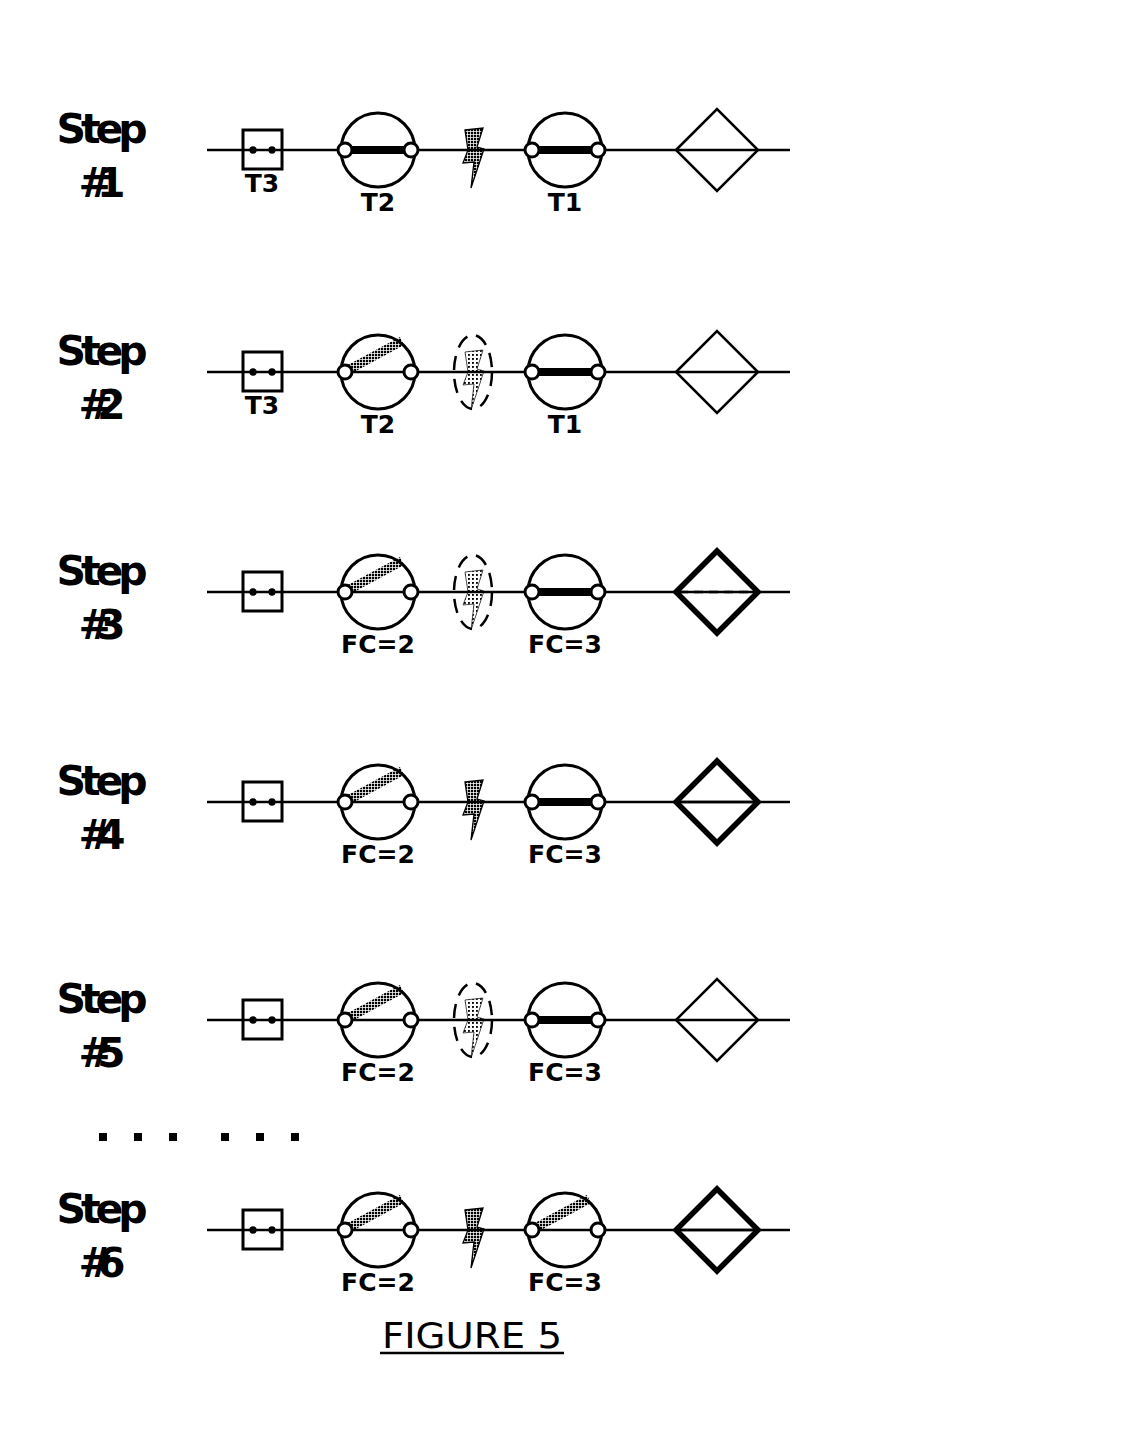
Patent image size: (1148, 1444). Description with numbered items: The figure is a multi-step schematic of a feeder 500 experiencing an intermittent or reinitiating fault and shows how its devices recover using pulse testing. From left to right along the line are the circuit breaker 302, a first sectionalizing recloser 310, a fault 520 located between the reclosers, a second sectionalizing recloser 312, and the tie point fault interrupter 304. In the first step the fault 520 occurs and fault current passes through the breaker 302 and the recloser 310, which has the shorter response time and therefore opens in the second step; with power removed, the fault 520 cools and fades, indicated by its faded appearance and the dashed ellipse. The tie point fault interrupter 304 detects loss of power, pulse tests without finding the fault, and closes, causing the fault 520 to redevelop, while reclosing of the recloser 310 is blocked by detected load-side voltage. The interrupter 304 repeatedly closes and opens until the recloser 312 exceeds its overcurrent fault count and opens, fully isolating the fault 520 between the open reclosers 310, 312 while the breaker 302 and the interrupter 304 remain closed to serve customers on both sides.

The circuit breaker 302 is at (262, 130).
The tie point fault interrupter 304 is at (702, 123).
The sectionalizing recloser 310 is at (359, 145).
The sectionalizing recloser 312 is at (546, 145).
The fault 520 is at (474, 128).
The feeder 500 is at (908, 157).